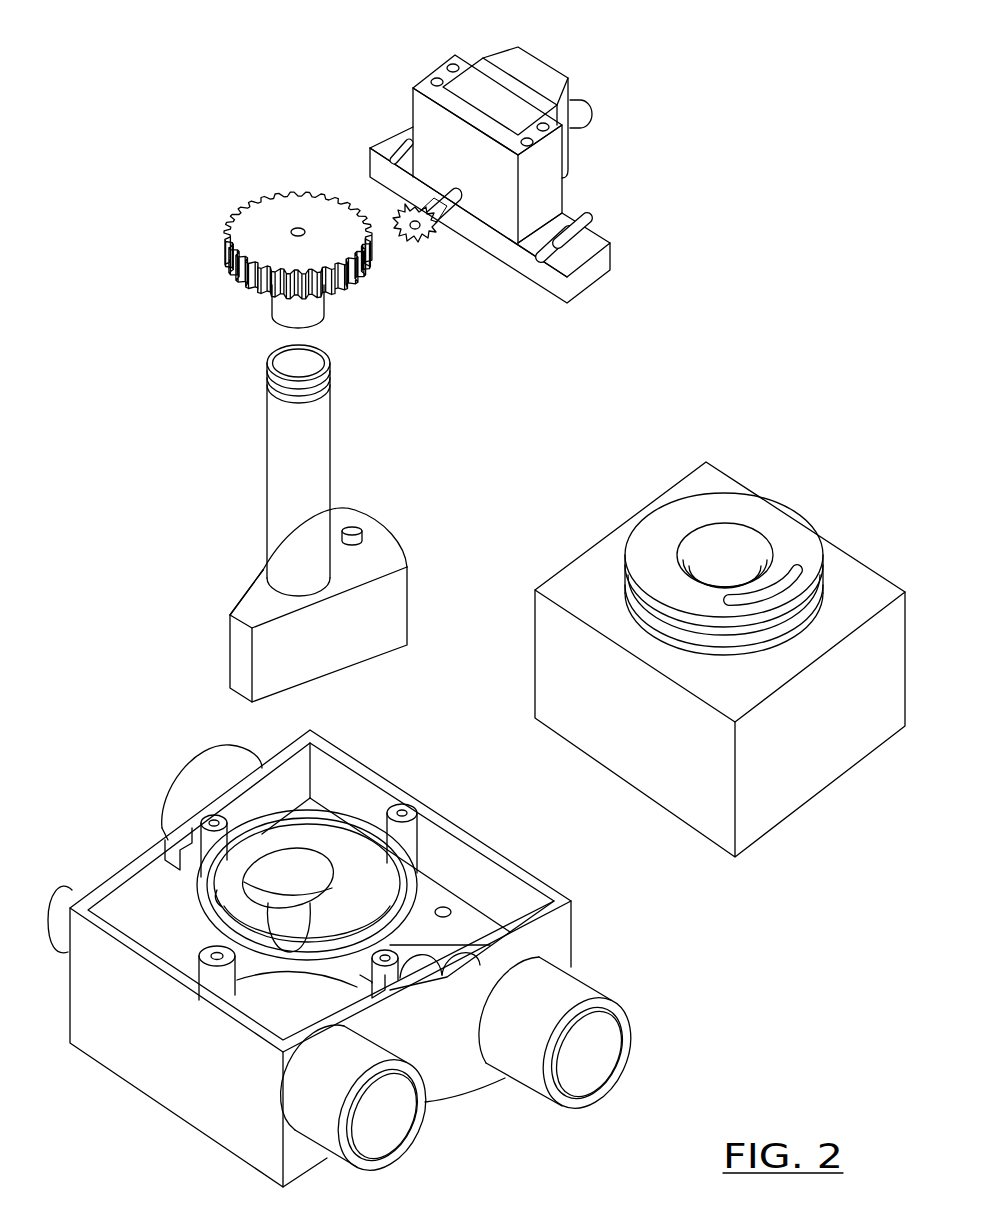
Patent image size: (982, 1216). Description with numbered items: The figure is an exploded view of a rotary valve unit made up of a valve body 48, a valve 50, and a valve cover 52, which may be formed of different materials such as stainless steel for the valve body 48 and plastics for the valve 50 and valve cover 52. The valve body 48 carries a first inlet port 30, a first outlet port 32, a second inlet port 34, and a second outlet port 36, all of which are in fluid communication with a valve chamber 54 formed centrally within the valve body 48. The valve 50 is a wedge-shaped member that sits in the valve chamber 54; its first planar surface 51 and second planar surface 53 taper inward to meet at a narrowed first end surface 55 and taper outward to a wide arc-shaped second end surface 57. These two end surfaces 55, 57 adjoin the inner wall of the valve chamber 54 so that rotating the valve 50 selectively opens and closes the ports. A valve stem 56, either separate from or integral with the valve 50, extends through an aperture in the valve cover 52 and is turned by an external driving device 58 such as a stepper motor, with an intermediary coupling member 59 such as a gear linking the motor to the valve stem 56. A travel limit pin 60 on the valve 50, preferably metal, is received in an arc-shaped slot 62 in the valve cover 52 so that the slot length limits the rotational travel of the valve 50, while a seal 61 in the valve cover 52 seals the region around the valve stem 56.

The first inlet port 30 is at (150, 792).
The first outlet port 32 is at (65, 878).
The second inlet port 34 is at (413, 1128).
The second outlet port 36 is at (627, 1055).
The valve body 48 is at (370, 958).
The valve 50 is at (316, 531).
The first planar surface 51 is at (248, 590).
The valve cover 52 is at (720, 647).
The second planar surface 53 is at (355, 647).
The valve chamber 54 is at (357, 814).
The first end surface 55 is at (238, 667).
The valve stem 56 is at (265, 465).
The second end surface 57 is at (353, 512).
The external driving device 58 is at (571, 90).
The intermediary coupling member 59 is at (230, 246).
The travel limit pin 60 is at (364, 540).
The seal 61 is at (742, 543).
The arc-shaped slot 62 is at (790, 572).